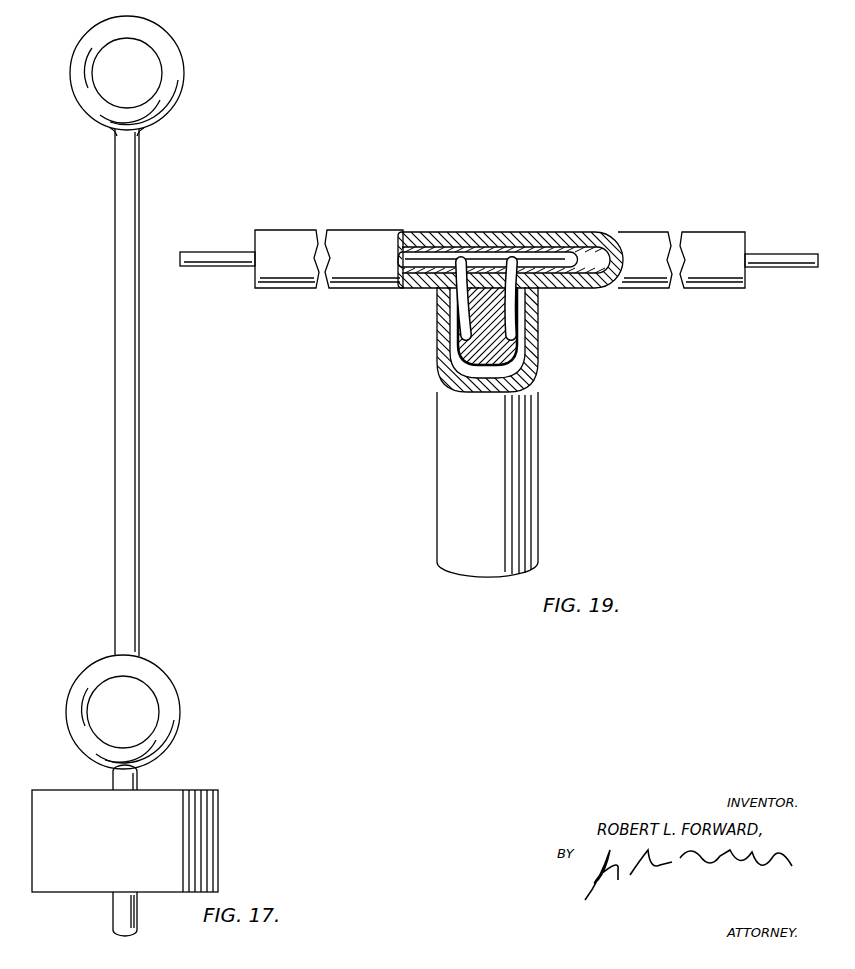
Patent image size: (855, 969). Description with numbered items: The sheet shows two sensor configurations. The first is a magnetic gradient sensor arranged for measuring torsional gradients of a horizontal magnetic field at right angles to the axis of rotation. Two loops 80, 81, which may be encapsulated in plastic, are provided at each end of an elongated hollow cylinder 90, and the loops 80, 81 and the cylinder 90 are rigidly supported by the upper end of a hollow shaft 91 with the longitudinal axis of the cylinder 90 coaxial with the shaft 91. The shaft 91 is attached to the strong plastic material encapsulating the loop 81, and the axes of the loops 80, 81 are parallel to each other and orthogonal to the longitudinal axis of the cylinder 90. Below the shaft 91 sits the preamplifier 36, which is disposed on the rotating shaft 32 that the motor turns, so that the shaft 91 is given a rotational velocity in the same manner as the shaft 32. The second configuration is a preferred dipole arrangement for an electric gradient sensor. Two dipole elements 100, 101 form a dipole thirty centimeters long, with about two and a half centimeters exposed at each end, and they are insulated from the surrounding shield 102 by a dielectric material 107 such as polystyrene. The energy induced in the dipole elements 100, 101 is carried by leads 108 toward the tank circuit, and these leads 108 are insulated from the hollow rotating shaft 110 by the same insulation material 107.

In FIG. 17, the loop 80 is at (160, 48).
In FIG. 17, the elongated hollow cylinder 90 is at (130, 408).
In FIG. 17, the loop 81 is at (80, 722).
In FIG. 17, the hollow shaft 91 is at (123, 783).
In FIG. 17, the preamplifier 36 is at (193, 815).
In FIG. 17, the shaft 32 is at (118, 910).
In FIG. 19, the dipole element 101 is at (228, 240).
In FIG. 19, the shield 102 is at (400, 216).
In FIG. 19, the dipole element 100 is at (783, 262).
In FIG. 19, the dielectric material 107 is at (593, 248).
In FIG. 19, the leads 108 is at (463, 323).
In FIG. 19, the hollow rotating shaft 110 is at (445, 414).